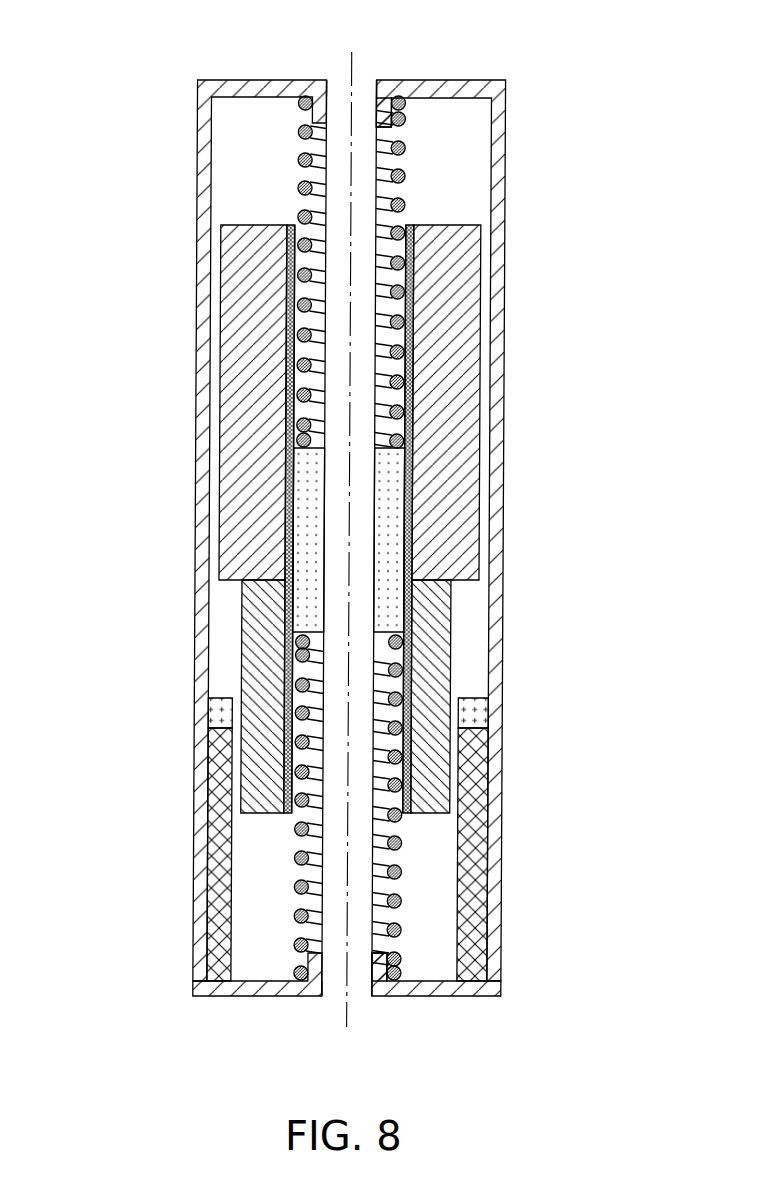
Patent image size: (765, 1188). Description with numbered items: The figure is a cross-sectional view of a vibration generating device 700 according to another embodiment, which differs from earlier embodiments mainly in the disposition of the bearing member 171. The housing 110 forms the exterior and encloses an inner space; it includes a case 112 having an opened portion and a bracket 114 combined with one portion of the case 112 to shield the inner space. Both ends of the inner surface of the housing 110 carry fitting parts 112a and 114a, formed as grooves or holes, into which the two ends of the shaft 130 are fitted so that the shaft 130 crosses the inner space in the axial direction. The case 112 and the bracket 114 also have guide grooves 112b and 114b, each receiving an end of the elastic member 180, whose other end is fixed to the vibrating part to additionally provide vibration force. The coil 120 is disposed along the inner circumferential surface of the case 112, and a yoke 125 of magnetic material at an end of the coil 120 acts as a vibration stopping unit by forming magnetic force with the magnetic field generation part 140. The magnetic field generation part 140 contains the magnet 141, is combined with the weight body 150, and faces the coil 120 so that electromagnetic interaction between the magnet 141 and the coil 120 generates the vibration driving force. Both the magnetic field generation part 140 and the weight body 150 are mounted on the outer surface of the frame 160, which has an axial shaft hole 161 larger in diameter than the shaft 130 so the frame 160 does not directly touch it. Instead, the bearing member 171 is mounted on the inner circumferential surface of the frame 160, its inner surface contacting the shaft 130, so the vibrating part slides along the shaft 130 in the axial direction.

The vibration generating device 700 is at (139, 71).
The housing 110 is at (582, 943).
The case 112 is at (492, 957).
The fitting part 112a is at (362, 92).
The guide groove 112b is at (400, 82).
The bracket 114 is at (492, 992).
The fitting part 114a is at (375, 975).
The guide groove 114b is at (404, 997).
The coil 120 is at (475, 778).
The yoke 125 is at (480, 713).
The shaft 130 is at (362, 147).
The magnetic field generation part 140 is at (437, 640).
The magnet 141 is at (431, 696).
The weight body 150 is at (462, 257).
The frame 160 is at (413, 303).
The shaft hole 161 is at (413, 353).
The bearing member 171 is at (402, 497).
The elastic member 180 is at (403, 203).